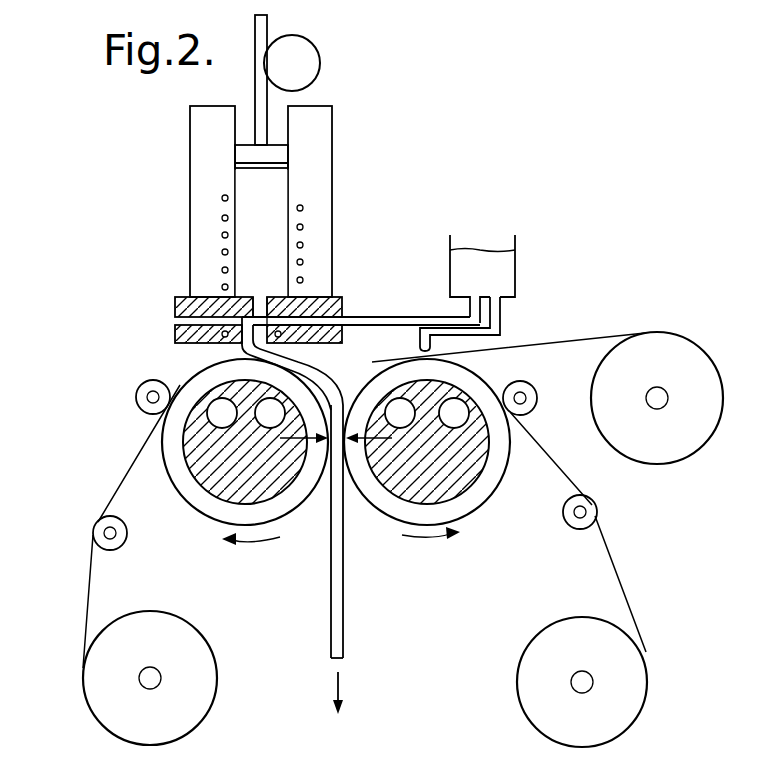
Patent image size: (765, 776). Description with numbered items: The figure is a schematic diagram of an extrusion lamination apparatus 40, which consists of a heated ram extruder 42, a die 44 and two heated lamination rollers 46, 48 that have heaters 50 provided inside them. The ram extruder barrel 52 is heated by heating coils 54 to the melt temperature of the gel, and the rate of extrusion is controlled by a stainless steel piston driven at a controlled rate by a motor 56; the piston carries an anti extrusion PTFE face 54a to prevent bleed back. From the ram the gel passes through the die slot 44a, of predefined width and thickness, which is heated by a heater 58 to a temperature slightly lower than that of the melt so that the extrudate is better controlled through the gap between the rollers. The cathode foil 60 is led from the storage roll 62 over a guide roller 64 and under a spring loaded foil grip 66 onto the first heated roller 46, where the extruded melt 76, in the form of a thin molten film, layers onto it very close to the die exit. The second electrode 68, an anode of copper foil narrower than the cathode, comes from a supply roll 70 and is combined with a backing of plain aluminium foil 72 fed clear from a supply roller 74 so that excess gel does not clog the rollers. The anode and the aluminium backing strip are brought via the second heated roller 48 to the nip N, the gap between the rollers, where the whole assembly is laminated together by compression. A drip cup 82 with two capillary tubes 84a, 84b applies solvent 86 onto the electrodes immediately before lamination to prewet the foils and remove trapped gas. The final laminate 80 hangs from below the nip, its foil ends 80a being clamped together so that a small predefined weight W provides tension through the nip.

The extrusion lamination apparatus 40 is at (440, 176).
The heated ram extruder 42 is at (210, 165).
The die 44 is at (195, 312).
The die slot 44a is at (322, 330).
The first heated roller 46 is at (215, 475).
The second heated roller 48 is at (462, 470).
The heaters 50 is at (268, 426).
The ram extruder barrel 52 is at (272, 192).
The heating coils 54 is at (278, 155).
The anti extrusion PTFE face 54a is at (288, 166).
The motor 56 is at (318, 62).
The heater 58 is at (222, 335).
The cathode foil 60 is at (87, 605).
The storage roll 62 is at (103, 678).
The guide roller 64 is at (98, 520).
The spring loaded foil grip 66 is at (142, 385).
The second electrode 68 is at (390, 362).
The supply roll 70 is at (695, 365).
The aluminium foil 72 is at (625, 585).
The supply roller 74 is at (625, 683).
The extruded melt 76 is at (308, 378).
The final laminate 80 is at (333, 598).
The foil ends 80a is at (330, 660).
The drip cup 82 is at (518, 260).
The capillary tube 84a is at (415, 308).
The capillary tube 84b is at (505, 315).
The solvent 86 is at (490, 279).
The nip N is at (297, 450).
The weight W is at (341, 709).